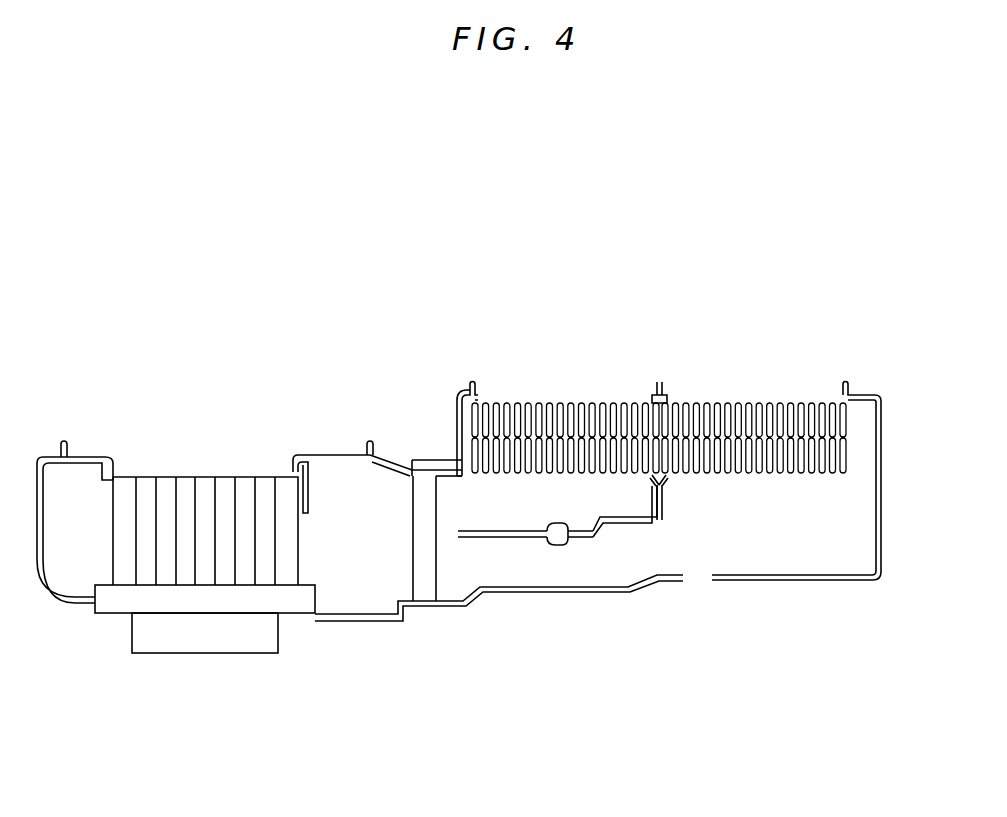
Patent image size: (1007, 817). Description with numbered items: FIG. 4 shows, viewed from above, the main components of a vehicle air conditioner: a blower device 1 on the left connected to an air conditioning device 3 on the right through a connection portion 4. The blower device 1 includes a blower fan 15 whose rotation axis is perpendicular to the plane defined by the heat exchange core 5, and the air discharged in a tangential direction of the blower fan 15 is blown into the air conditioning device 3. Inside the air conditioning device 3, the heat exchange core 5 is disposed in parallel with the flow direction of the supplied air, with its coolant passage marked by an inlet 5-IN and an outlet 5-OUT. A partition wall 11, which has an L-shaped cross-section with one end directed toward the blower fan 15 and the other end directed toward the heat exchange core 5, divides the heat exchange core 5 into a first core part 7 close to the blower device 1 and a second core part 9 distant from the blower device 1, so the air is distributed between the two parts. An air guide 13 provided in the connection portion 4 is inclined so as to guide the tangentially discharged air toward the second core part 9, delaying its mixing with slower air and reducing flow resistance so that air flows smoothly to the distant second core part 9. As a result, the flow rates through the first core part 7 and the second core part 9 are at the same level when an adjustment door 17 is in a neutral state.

The blower device 1 is at (425, 420).
The air conditioning device 3 is at (843, 273).
The connection portion 4 is at (443, 450).
The heat exchange core 5 is at (755, 335).
The coolant outlet 5-OUT is at (822, 392).
The coolant inlet 5-IN is at (790, 488).
The first core part 7 is at (655, 395).
The second core part 9 is at (850, 398).
The partition wall 11 is at (642, 525).
The air guide 13 is at (420, 578).
The blower fan 15 is at (167, 567).
The adjustment door 17 is at (503, 537).